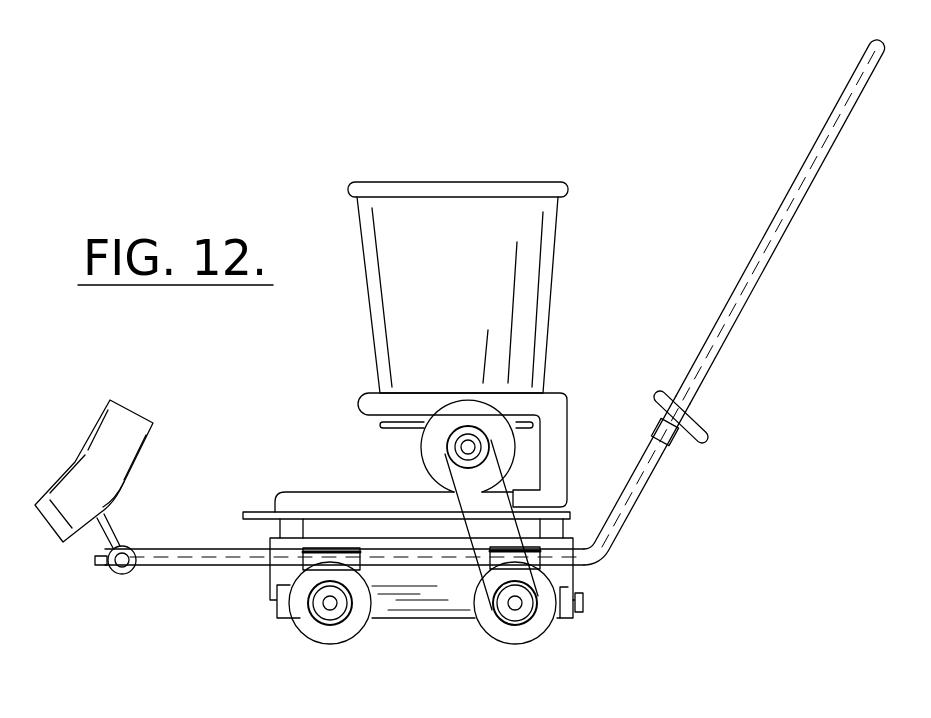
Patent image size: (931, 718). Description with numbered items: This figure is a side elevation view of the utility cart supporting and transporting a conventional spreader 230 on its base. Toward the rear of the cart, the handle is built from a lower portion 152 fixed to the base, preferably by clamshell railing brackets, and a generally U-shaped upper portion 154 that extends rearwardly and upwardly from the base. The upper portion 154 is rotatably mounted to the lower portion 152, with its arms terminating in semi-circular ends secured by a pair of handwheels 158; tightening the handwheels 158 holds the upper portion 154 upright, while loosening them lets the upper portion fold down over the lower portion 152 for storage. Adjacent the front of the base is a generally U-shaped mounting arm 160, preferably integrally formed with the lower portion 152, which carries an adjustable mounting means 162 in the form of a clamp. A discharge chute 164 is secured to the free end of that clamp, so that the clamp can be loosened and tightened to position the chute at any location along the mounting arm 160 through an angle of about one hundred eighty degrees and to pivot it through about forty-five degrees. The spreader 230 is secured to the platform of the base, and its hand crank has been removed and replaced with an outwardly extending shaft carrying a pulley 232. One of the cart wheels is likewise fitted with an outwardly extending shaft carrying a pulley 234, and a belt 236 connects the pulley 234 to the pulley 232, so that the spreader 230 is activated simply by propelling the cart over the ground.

The lower portion 152 is at (648, 480).
The upper portion 154 is at (788, 202).
The handwheels 158 is at (705, 433).
The mounting arm 160 is at (212, 563).
The adjustable mounting means 162 is at (102, 566).
The discharge chute 164 is at (98, 447).
The spreader 230 is at (482, 288).
The pulley 232 is at (446, 452).
The pulley 234 is at (528, 622).
The belt 236 is at (470, 528).